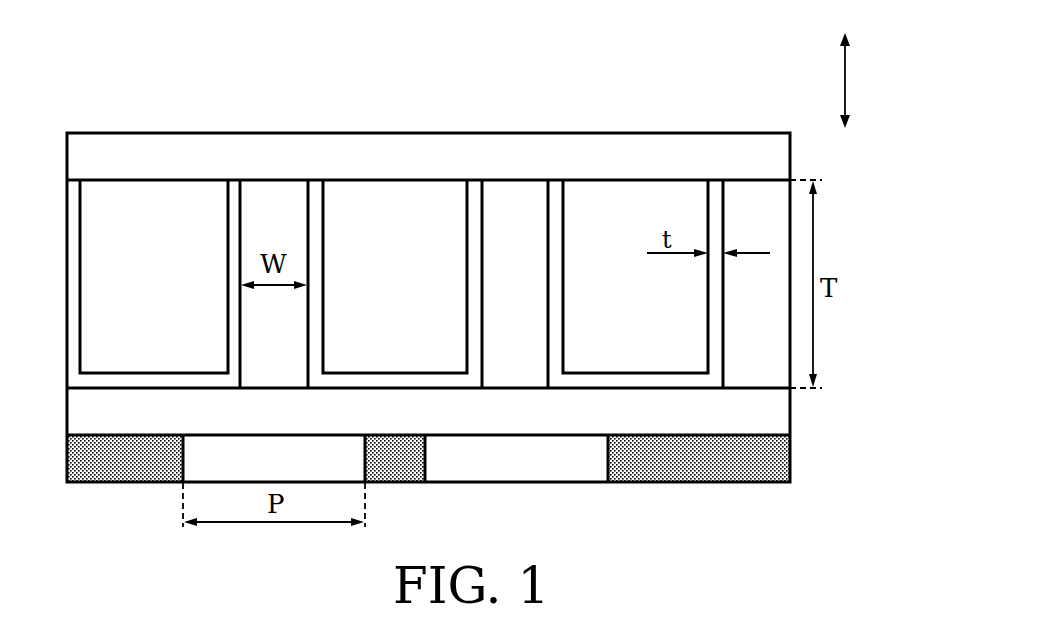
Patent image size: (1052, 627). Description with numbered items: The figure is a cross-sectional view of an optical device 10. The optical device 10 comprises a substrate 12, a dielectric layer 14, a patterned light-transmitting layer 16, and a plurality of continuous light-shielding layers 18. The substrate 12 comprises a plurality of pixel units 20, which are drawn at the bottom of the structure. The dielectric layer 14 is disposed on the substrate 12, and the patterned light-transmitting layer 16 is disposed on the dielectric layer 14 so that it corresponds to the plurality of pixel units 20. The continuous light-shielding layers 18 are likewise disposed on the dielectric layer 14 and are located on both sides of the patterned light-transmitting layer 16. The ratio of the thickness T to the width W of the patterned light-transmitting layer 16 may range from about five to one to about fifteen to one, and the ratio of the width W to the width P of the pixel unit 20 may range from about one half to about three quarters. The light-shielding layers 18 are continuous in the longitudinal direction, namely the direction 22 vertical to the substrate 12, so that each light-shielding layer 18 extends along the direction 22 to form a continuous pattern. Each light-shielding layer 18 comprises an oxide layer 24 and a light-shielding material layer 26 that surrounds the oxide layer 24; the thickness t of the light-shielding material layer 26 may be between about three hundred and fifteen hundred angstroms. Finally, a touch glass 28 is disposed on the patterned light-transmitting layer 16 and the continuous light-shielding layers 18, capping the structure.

The optical device 10 is at (73, 29).
The substrate 12 is at (777, 458).
The dielectric layer 14 is at (777, 411).
The patterned light-transmitting layer 16 is at (274, 195).
The continuous light-shielding layer 18 is at (235, 77).
The pixel unit 20 is at (293, 472).
The direction 22 is at (845, 80).
The oxide layer 24 is at (153, 195).
The light-shielding material layer 26 is at (233, 195).
The touch glass 28 is at (777, 155).